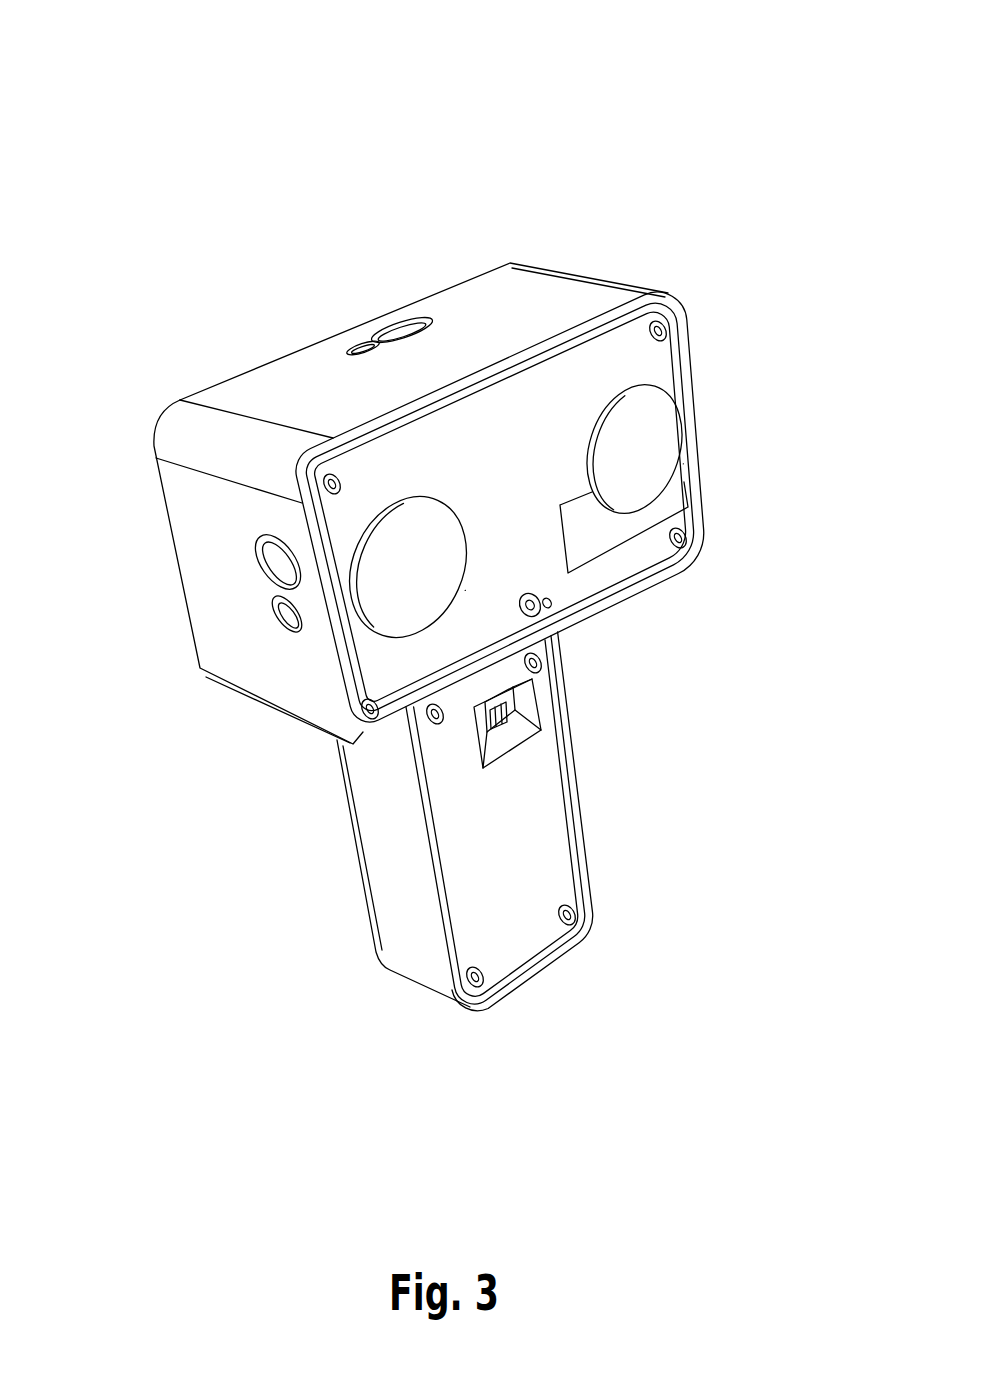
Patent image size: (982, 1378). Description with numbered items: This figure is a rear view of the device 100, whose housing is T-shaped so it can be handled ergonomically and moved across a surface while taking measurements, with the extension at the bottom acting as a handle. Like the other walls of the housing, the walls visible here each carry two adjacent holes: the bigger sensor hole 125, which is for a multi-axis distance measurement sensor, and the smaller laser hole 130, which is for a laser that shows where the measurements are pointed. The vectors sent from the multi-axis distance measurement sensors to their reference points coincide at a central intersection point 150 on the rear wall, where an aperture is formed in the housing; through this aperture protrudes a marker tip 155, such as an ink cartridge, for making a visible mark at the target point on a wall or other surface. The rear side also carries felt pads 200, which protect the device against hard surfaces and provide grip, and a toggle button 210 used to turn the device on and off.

The device 100 is at (627, 101).
The sensor hole 125 is at (403, 318).
The laser hole 130 is at (348, 352).
The intersection point 150 is at (543, 596).
The marker tip 155 is at (548, 605).
The felt pads 200 is at (393, 593).
The toggle button 210 is at (507, 711).